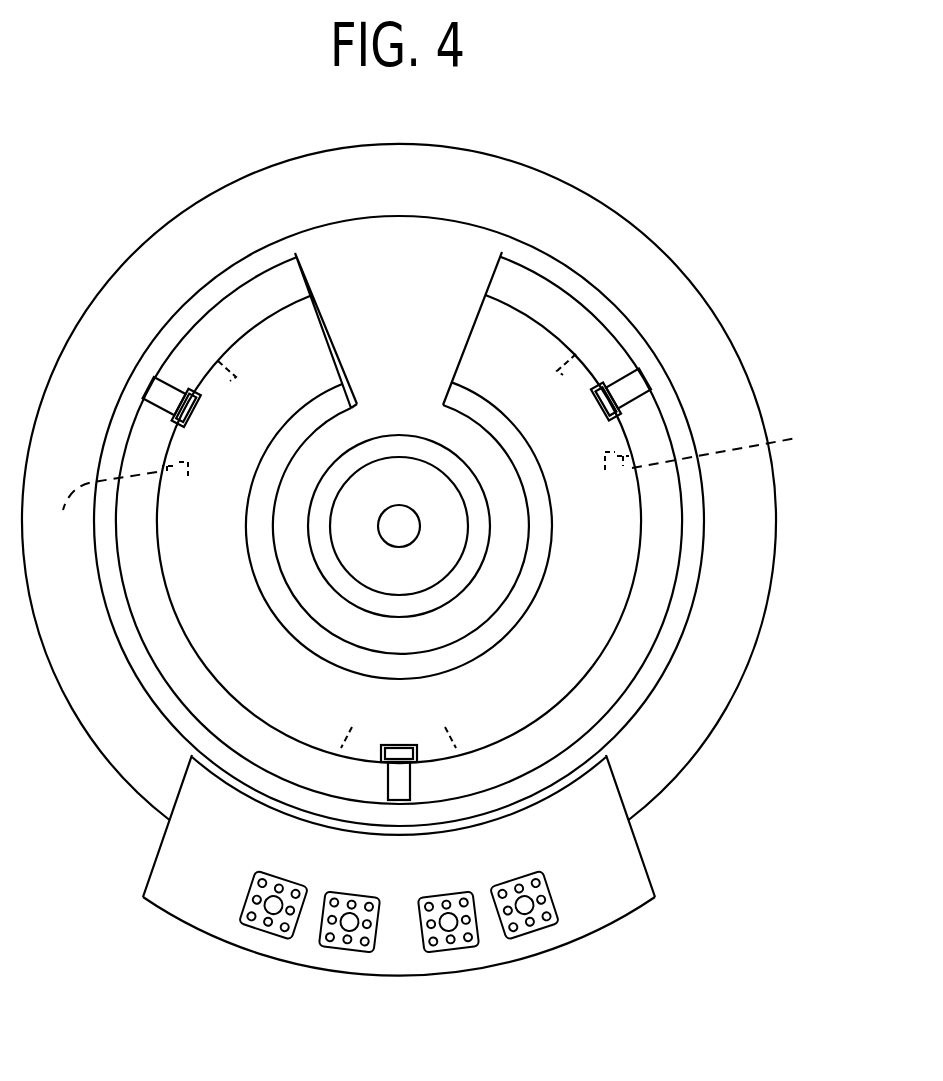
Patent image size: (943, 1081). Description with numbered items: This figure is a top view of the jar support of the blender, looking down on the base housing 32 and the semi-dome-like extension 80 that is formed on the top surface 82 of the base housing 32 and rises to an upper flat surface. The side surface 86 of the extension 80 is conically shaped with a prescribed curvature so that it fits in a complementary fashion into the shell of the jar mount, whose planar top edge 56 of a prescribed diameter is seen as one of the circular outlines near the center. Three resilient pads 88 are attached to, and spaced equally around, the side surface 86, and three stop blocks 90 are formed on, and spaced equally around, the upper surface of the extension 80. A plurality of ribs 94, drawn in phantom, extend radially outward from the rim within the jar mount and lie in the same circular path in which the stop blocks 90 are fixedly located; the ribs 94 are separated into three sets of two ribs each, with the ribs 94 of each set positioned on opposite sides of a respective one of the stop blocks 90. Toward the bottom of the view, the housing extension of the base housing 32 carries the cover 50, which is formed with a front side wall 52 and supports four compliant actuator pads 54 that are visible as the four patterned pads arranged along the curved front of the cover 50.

The base housing 32 is at (740, 322).
The cover 50 is at (450, 904).
The front side wall 52 is at (397, 978).
The compliant actuator pads 54 is at (255, 945).
The top edge 56 is at (603, 625).
The semi-dome-like extension 80 is at (600, 296).
The top surface 82 is at (458, 232).
The side surface 86 is at (660, 535).
The resilient pads 88 is at (637, 382).
The stop blocks 90 is at (200, 390).
The ribs 94 is at (440, 551).